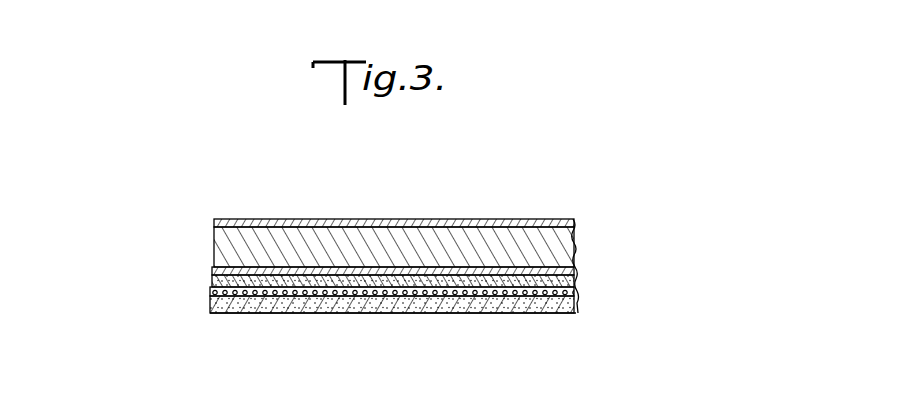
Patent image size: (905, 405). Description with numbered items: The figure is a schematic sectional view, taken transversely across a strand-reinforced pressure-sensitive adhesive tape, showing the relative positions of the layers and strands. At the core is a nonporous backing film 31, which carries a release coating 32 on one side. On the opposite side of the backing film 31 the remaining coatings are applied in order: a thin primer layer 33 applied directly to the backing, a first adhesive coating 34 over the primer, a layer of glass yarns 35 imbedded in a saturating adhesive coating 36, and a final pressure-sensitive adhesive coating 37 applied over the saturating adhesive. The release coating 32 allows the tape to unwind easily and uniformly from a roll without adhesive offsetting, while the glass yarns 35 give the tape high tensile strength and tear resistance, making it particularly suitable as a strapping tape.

The nonporous backing film 31 is at (215, 236).
The release coating 32 is at (248, 189).
The primer layer 33 is at (213, 270).
The first adhesive coating 34 is at (392, 311).
The glass yarns 35 is at (209, 304).
The saturating adhesive coating 36 is at (211, 289).
The final pressure-sensitive adhesive coating 37 is at (242, 313).